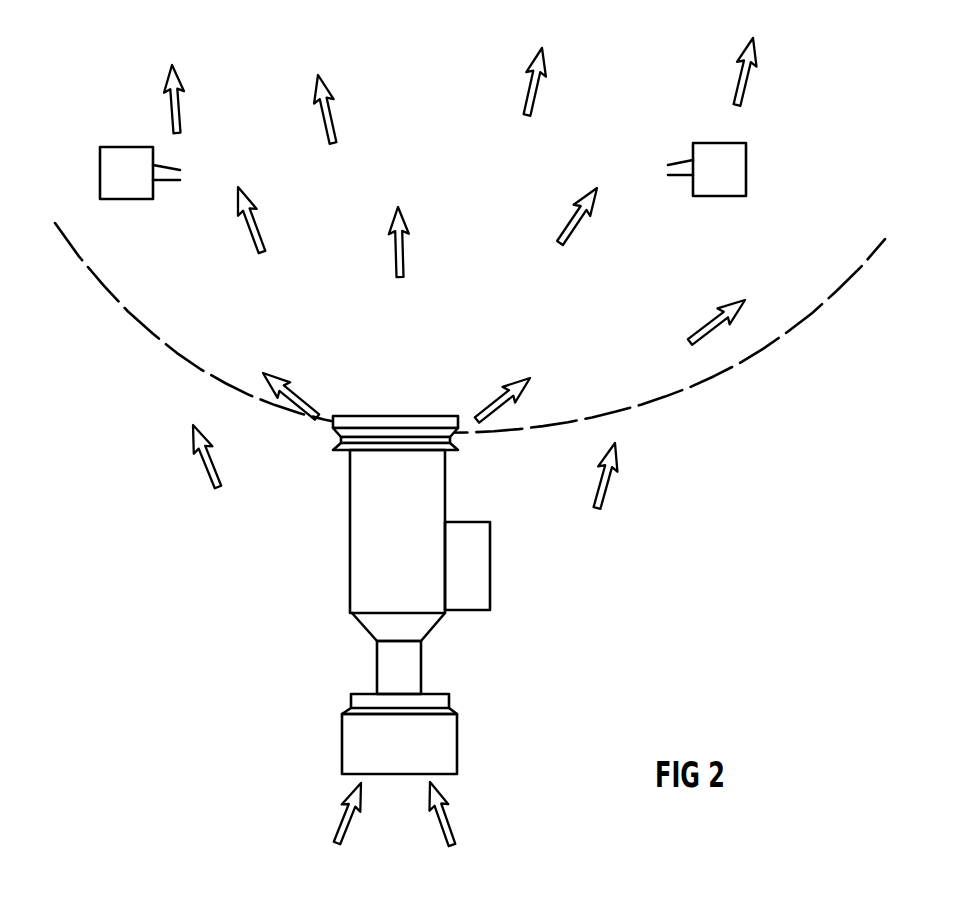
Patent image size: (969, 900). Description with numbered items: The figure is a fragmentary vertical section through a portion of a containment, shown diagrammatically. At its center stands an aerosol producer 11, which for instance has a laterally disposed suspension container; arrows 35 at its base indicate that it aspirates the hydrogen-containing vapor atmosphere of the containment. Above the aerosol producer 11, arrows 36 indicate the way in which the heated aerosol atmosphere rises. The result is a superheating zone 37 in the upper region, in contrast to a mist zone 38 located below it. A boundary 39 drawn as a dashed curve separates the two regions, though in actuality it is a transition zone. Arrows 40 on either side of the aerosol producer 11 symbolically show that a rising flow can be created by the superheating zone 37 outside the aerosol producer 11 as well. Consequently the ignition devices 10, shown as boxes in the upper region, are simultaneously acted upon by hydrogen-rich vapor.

The ignition device 10 is at (113, 199).
The aerosol producer 11 is at (383, 567).
The arrows 35 is at (440, 822).
The arrows 36 is at (331, 127).
The superheating zone 37 is at (341, 305).
The mist zone 38 is at (658, 618).
The boundary 39 is at (763, 347).
The arrows 40 is at (213, 480).